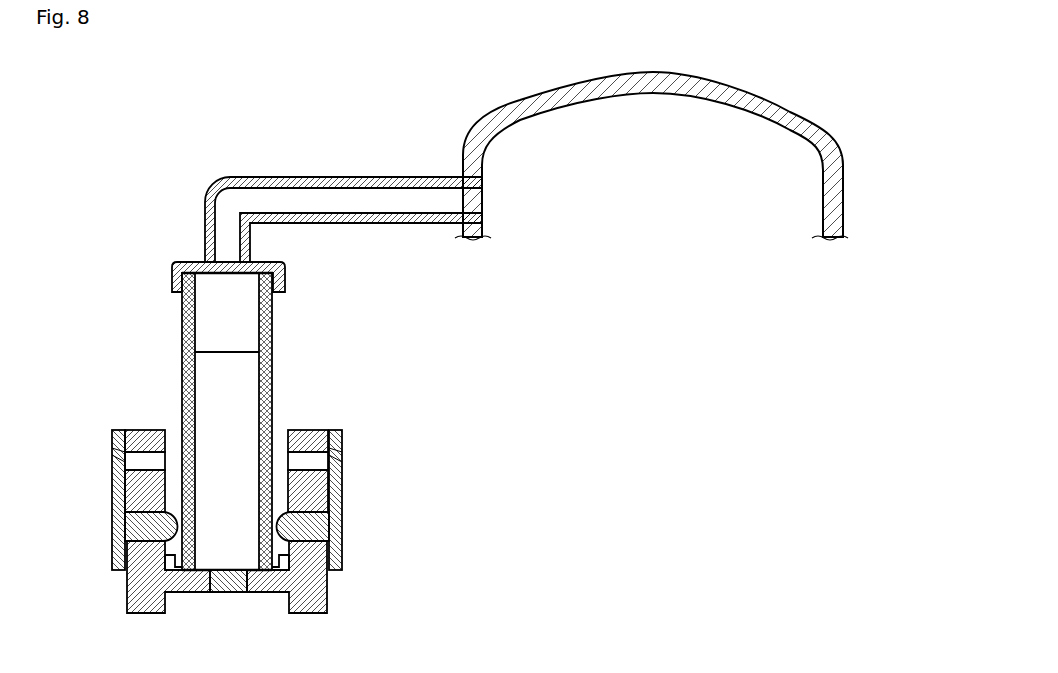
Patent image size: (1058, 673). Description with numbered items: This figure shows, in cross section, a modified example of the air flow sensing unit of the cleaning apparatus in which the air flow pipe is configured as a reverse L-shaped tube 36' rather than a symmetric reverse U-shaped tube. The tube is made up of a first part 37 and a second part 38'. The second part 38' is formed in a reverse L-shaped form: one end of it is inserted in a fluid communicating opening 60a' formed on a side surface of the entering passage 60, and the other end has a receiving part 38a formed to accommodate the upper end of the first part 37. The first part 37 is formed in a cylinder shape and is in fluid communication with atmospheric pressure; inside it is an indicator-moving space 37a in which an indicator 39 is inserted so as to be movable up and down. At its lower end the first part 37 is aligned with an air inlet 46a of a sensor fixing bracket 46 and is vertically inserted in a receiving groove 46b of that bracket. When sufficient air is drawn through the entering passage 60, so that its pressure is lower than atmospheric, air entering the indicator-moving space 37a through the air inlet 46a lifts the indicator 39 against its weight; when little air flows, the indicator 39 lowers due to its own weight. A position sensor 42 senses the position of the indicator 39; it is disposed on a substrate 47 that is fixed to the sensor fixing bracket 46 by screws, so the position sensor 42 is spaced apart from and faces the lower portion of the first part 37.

The entering passage 60 is at (768, 103).
The fluid communicating opening 60a' is at (518, 231).
The reverse L-shaped tube 36' is at (287, 347).
The second part 38' is at (318, 193).
The receiving part 38a is at (180, 266).
The first part 37 is at (188, 364).
The indicator-moving space 37a is at (190, 336).
The indicator 39 is at (228, 412).
The substrate 47 is at (118, 493).
The position sensor 42 is at (124, 521).
The sensor fixing bracket 46 is at (140, 598).
The receiving groove 46b is at (180, 549).
The air inlet 46a is at (220, 588).